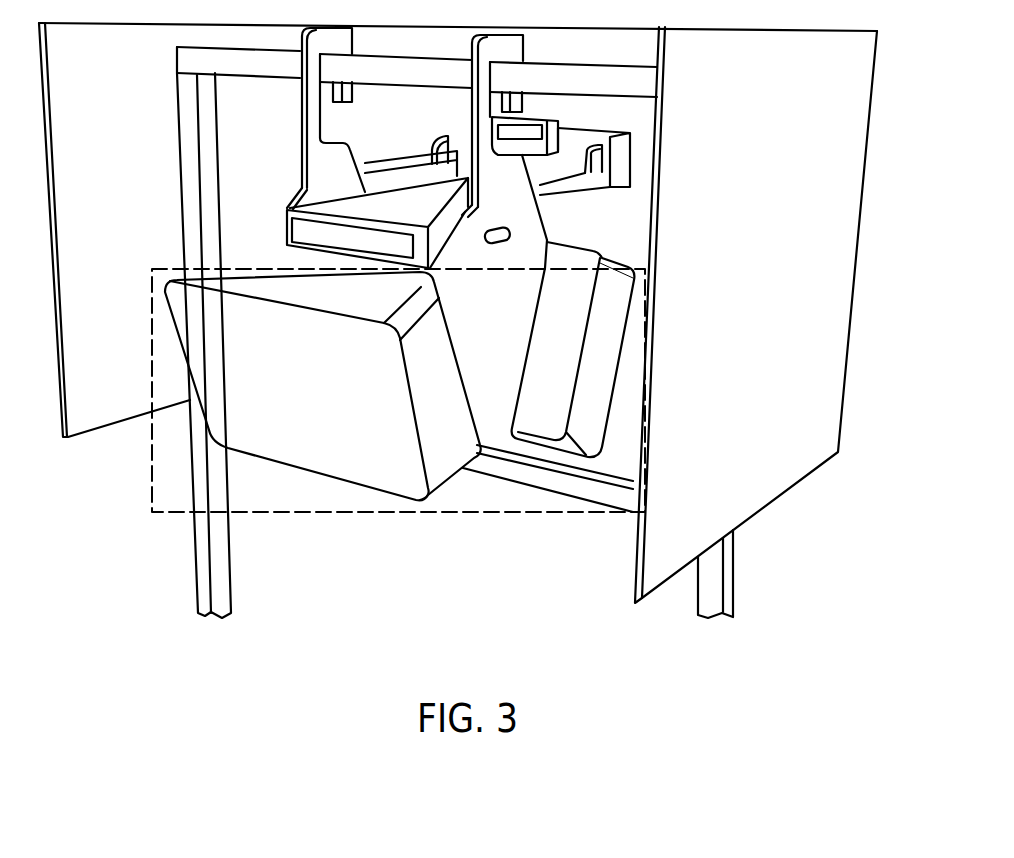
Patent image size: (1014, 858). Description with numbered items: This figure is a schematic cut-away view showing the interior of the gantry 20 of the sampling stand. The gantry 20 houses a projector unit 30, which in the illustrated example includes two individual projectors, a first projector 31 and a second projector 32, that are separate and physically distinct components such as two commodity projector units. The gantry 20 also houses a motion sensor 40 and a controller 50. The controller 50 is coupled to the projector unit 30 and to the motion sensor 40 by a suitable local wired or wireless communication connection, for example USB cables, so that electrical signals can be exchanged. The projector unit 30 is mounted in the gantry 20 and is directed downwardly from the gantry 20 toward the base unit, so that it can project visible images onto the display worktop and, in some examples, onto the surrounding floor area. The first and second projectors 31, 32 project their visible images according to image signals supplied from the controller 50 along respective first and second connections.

The gantry 20 is at (827, 323).
The projector unit 30 is at (303, 515).
The first projector 31 is at (400, 483).
The second projector 32 is at (545, 428).
The motion sensor 40 is at (618, 157).
The controller 50 is at (513, 228).